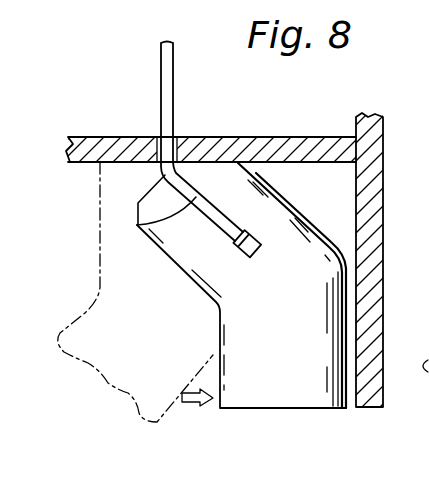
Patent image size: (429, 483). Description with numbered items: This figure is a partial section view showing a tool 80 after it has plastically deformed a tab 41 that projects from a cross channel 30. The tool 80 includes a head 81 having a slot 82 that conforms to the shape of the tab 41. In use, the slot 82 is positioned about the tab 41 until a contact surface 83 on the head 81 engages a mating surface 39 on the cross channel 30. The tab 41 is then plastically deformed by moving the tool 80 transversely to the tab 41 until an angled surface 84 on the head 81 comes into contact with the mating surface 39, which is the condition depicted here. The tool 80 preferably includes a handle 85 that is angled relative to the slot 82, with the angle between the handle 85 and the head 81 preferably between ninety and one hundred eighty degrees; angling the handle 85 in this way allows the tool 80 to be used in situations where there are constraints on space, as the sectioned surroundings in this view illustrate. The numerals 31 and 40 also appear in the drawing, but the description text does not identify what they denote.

The cross channel 30 is at (100, 137).
The aperture in mounting plate 31 is at (155, 152).
The mating surface 39 is at (330, 166).
The rod 40 is at (158, 43).
The tab 41 is at (137, 227).
The tool 80 is at (308, 274).
The head 81 is at (186, 240).
The slot 82 is at (248, 235).
The contact surface 83 is at (145, 192).
The angled surface 84 is at (212, 150).
The handle 85 is at (310, 330).